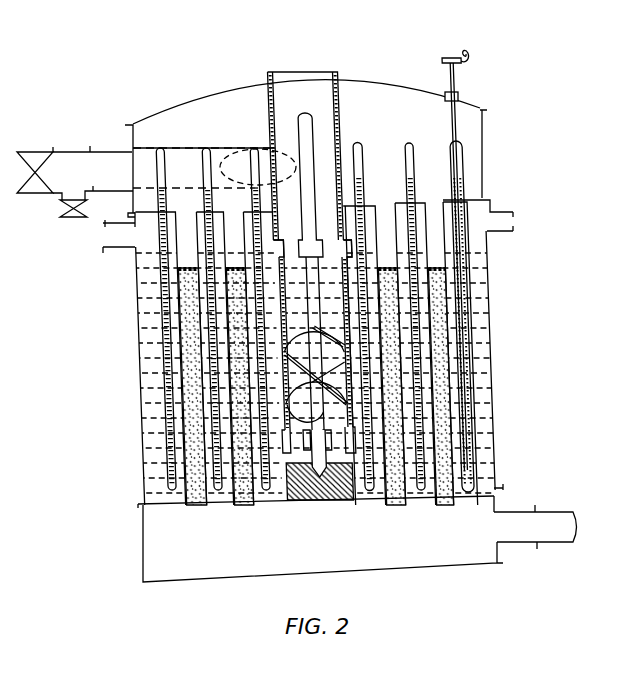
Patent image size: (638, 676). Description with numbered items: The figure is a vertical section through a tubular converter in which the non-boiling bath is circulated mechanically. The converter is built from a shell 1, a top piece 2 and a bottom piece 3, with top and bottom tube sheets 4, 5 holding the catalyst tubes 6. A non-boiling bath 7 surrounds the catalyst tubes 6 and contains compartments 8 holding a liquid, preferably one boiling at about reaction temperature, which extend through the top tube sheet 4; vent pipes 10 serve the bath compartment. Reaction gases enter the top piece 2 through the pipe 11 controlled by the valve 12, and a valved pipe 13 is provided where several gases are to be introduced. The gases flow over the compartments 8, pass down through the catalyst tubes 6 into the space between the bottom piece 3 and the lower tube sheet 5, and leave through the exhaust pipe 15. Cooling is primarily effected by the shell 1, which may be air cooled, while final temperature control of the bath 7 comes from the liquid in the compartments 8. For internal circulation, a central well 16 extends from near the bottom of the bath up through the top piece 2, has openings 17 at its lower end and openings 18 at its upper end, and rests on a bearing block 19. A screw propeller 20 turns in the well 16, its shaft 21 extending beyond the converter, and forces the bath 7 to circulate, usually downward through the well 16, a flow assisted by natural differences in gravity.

The shell 1 is at (496, 292).
The top piece 2 is at (214, 93).
The bottom piece 3 is at (433, 566).
The top tube sheet 4 is at (490, 204).
The bottom tube sheet 5 is at (497, 490).
The catalyst tubes 6 is at (445, 405).
The non-boiling bath 7 is at (485, 349).
The compartments 8 is at (411, 143).
The vent pipes 10 is at (510, 222).
The pipe 11 is at (107, 152).
The valve 12 is at (35, 152).
The valved pipe 13 is at (58, 218).
The exhaust pipe 15 is at (517, 511).
The central well 16 is at (342, 73).
The openings 17 is at (362, 453).
The openings 18 is at (349, 250).
The bearing block 19 is at (327, 501).
The screw propeller 20 is at (310, 428).
The shaft 21 is at (306, 115).